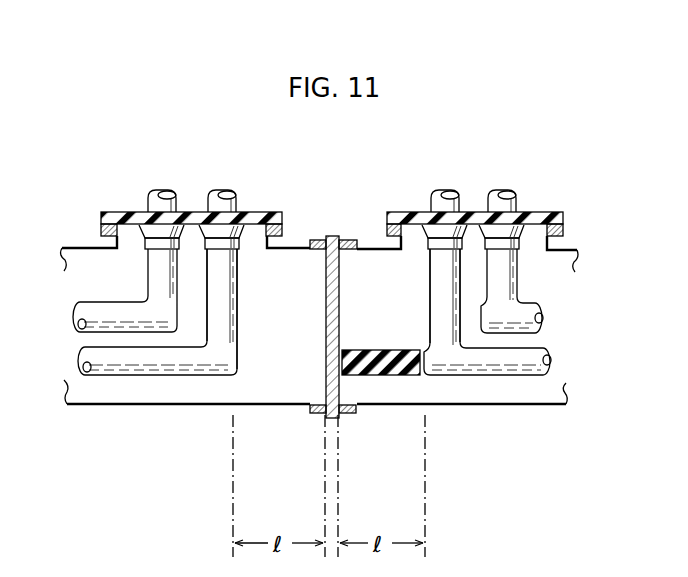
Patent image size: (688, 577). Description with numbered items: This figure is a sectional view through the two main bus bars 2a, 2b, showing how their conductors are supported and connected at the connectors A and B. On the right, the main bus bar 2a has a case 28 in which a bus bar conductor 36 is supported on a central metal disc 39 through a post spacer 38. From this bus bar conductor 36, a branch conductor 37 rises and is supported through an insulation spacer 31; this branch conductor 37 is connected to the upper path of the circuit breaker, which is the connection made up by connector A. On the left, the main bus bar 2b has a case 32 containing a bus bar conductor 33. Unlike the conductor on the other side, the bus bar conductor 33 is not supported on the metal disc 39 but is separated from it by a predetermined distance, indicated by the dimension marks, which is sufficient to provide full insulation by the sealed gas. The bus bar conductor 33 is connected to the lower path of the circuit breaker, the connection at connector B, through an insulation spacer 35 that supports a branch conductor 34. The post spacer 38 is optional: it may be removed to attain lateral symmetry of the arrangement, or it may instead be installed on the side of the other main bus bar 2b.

The main bus bar 2a is at (488, 404).
The main bus bar 2b is at (183, 404).
The case 28 is at (400, 404).
The case 32 is at (262, 404).
The insulation spacer 31 is at (410, 226).
The insulation spacer 35 is at (250, 226).
The bus bar conductor 33 is at (238, 358).
The branch conductor 34 is at (236, 316).
The bus bar conductor 36 is at (428, 362).
The branch conductor 37 is at (443, 320).
The post spacer 38 is at (368, 376).
The metal disc 39 is at (325, 378).
The connector A is at (472, 192).
The connector B is at (188, 192).